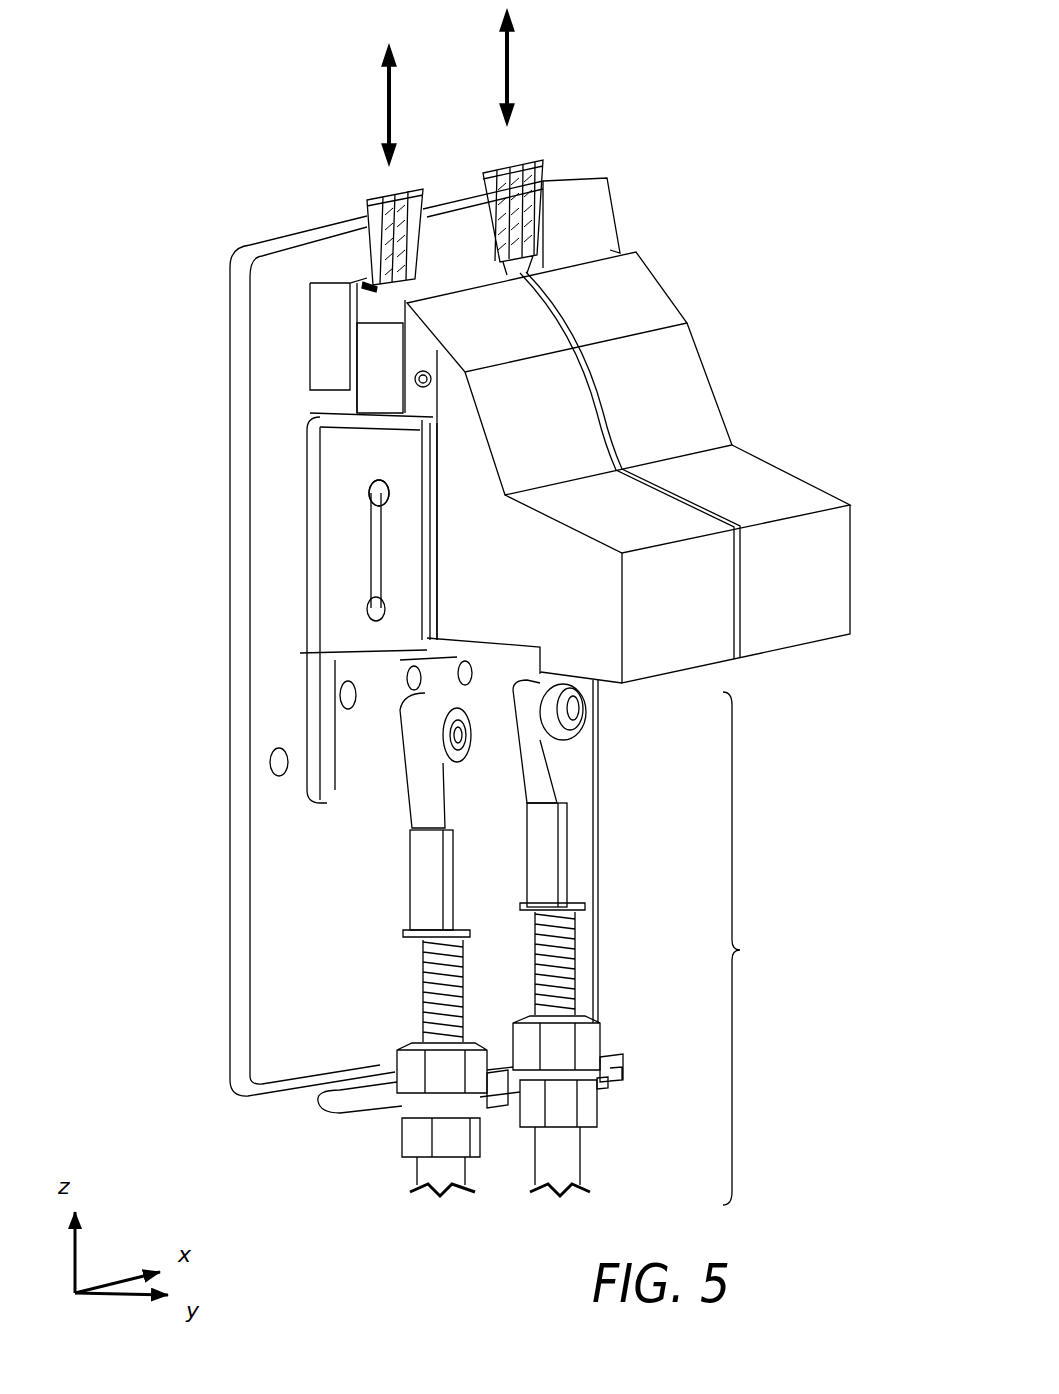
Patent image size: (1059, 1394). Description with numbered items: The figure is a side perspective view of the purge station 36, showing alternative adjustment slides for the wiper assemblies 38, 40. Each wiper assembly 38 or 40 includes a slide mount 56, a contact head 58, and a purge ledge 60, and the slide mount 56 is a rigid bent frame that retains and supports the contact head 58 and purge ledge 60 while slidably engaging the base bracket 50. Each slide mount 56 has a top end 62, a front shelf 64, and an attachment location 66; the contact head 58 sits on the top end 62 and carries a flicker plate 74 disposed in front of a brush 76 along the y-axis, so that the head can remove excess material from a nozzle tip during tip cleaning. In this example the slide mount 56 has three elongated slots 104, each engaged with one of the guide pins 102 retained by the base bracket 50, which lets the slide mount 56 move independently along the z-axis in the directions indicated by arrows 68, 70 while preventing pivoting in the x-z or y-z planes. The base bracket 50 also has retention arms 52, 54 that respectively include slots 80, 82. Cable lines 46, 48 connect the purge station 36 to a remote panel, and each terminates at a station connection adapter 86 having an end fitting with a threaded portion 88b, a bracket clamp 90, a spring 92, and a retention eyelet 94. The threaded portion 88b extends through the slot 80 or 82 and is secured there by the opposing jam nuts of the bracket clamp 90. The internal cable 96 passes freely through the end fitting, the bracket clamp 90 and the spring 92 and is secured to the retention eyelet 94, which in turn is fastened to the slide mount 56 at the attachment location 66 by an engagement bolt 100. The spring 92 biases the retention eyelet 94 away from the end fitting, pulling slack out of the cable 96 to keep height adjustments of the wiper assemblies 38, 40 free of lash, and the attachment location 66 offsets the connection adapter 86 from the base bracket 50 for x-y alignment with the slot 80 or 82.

The purge station 36 is at (757, 68).
The wiper assembly 38 is at (474, 68).
The wiper assembly 40 is at (298, 112).
The cable line 46 is at (273, 1135).
The cable line 48 is at (748, 1082).
The base bracket 50 is at (240, 660).
The retention arm 52 is at (363, 1108).
The retention arm 54 is at (625, 1068).
The slide mount 56 is at (301, 626).
The contact head 58 is at (481, 262).
The purge ledge 60 is at (528, 400).
The top end 62 is at (337, 407).
The front shelf 64 is at (477, 645).
The attachment location 66 is at (383, 758).
The arrow 68 is at (510, 62).
The arrow 70 is at (386, 118).
The flicker plate 74 is at (433, 282).
The brush 76 is at (348, 277).
The slot 80 is at (487, 1112).
The slot 82 is at (603, 1082).
The station connection adapter 86 is at (537, 960).
The threaded portion 88b is at (415, 1180).
The bracket clamp 90 is at (417, 1137).
The spring 92 is at (422, 995).
The retention eyelet 94 is at (420, 840).
The cable 96 is at (430, 970).
The engagement bolt 100 is at (460, 763).
The guide pin 102 is at (378, 497).
The slot 104 is at (378, 553).